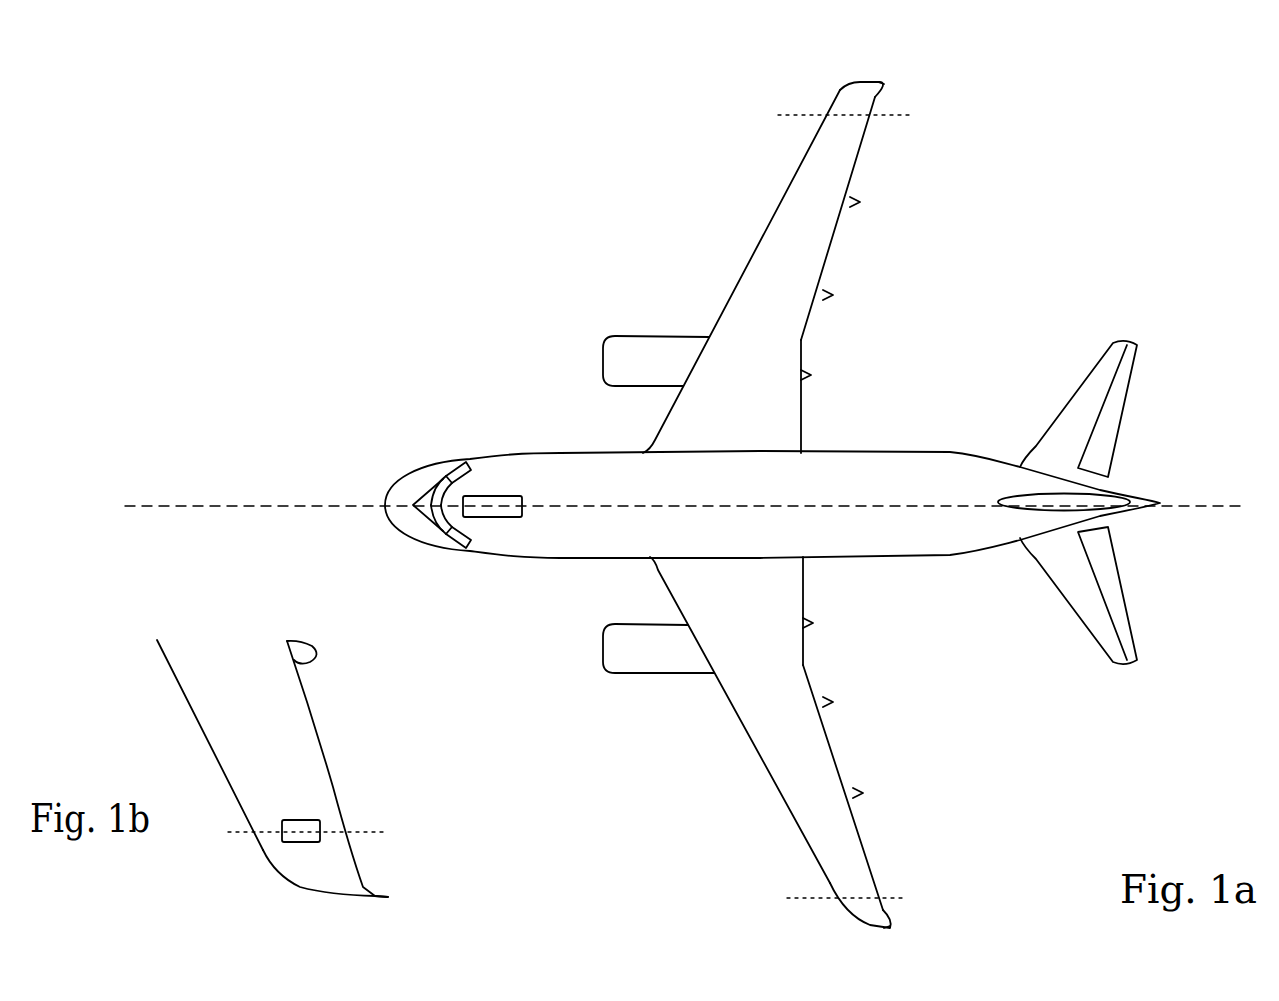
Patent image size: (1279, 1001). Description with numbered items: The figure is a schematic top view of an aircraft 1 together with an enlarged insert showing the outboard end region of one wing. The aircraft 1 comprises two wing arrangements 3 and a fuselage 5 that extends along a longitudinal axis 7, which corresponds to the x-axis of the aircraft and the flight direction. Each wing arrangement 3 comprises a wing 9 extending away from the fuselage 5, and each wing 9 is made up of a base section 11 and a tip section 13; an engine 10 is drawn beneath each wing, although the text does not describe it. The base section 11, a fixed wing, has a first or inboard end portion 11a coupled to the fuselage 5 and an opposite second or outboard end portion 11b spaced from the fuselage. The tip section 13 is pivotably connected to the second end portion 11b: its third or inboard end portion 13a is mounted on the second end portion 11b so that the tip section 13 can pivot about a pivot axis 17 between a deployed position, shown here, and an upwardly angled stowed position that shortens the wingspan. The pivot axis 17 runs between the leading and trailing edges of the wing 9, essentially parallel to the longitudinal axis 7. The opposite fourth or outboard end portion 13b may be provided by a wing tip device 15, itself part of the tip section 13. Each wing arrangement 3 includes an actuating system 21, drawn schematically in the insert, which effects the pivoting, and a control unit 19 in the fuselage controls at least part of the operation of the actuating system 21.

In FIG. 1A, the aircraft 1 is at (1080, 238).
In FIG. 1A, the wing arrangement 3 is at (703, 197).
In FIG. 1A, the fuselage 5 is at (942, 548).
In FIG. 1A, the longitudinal axis 7 is at (158, 506).
In FIG. 1A, the wing 9 is at (740, 282).
In FIG. 1A, the engine 10 is at (613, 350).
In FIG. 1A, the base section 11 is at (802, 272).
In FIG. 1B, the base section 11 is at (200, 690).
In FIG. 1A, the first end portion 11a is at (780, 440).
In FIG. 1A, the second end portion 11b is at (870, 125).
In FIG. 1B, the second end portion 11b is at (350, 817).
In FIG. 1A, the tip section 13 is at (862, 95).
In FIG. 1B, the tip section 13 is at (310, 867).
In FIG. 1B, the third end portion 13a is at (260, 847).
In FIG. 1B, the fourth end portion 13b is at (393, 898).
In FIG. 1A, the wing tip device 15 is at (885, 83).
In FIG. 1A, the pivot axis 17 is at (910, 897).
In FIG. 1B, the pivot axis 17 is at (383, 832).
In FIG. 1A, the control unit 19 is at (488, 495).
In FIG. 1B, the actuating system 21 is at (313, 820).